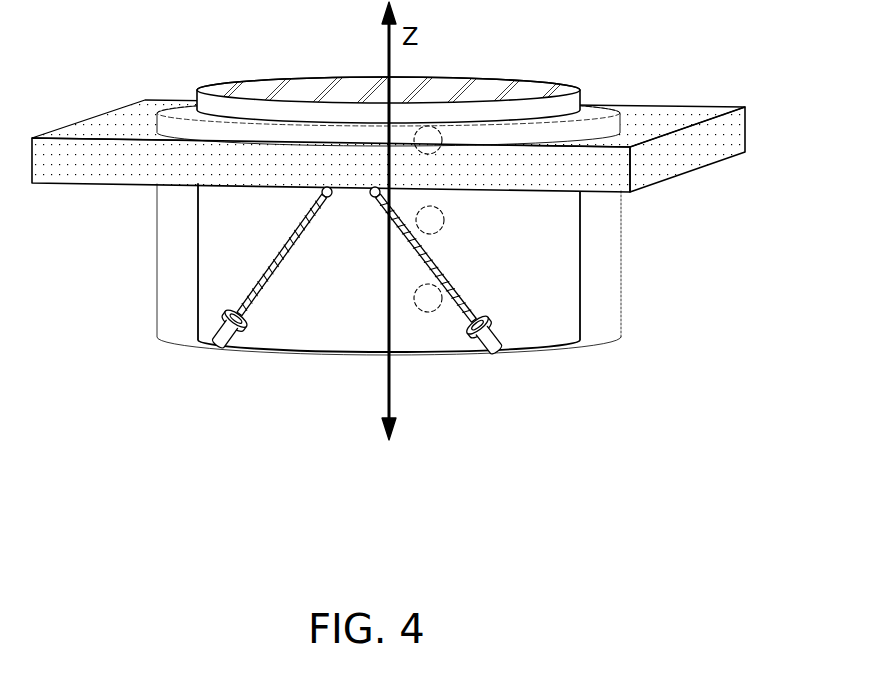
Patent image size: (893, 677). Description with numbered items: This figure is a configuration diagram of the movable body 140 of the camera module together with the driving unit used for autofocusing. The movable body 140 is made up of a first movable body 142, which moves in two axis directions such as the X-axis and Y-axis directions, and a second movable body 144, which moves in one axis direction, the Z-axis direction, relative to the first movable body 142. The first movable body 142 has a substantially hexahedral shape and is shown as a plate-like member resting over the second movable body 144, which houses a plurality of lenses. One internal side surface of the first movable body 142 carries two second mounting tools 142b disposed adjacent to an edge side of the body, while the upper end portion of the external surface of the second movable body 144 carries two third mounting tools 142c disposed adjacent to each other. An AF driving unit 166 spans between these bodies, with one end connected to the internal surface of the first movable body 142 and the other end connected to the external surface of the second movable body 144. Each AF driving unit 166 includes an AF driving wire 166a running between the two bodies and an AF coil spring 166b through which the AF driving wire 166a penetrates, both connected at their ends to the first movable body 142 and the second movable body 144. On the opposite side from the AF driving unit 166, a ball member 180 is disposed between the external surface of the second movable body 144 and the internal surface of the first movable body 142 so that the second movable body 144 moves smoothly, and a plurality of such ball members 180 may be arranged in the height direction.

The movable body 140 is at (735, 245).
The first movable body 142 is at (388, 154).
The second mounting tools 142b is at (492, 343).
The third mounting tools 142c is at (375, 198).
The second movable body 144 is at (570, 292).
The AF driving unit 166 is at (307, 357).
The AF driving wire 166a is at (238, 318).
The AF coil spring 166b is at (281, 255).
The ball member 180 is at (432, 207).